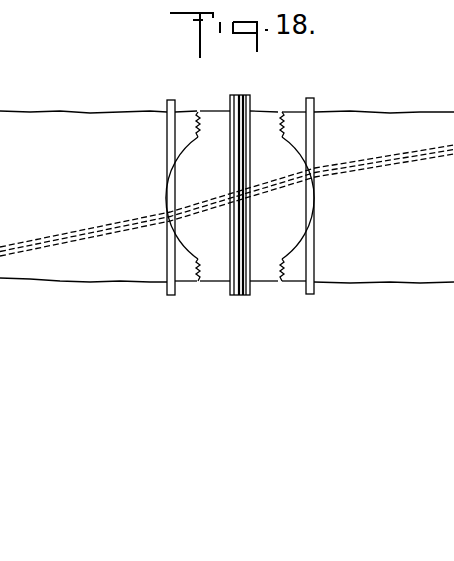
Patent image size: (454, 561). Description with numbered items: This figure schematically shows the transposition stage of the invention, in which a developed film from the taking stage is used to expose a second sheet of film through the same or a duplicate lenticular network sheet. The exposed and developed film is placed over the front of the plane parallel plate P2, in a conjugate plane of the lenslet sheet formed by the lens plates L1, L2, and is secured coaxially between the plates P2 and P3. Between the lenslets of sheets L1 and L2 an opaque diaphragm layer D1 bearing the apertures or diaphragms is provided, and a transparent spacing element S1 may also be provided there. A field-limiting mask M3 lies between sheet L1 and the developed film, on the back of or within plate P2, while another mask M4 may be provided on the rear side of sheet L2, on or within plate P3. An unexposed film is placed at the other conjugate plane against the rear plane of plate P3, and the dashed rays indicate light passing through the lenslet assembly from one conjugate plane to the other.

The plane parallel plate P2 is at (5, 305).
The field-limiting mask M3 is at (167, 295).
The lens plate L1 is at (213, 281).
The diaphragm layer D1 is at (232, 295).
The spacer S1 is at (244, 287).
The lens plate L2 is at (276, 283).
The mask M4 is at (307, 295).
The plane parallel plate P3 is at (367, 275).